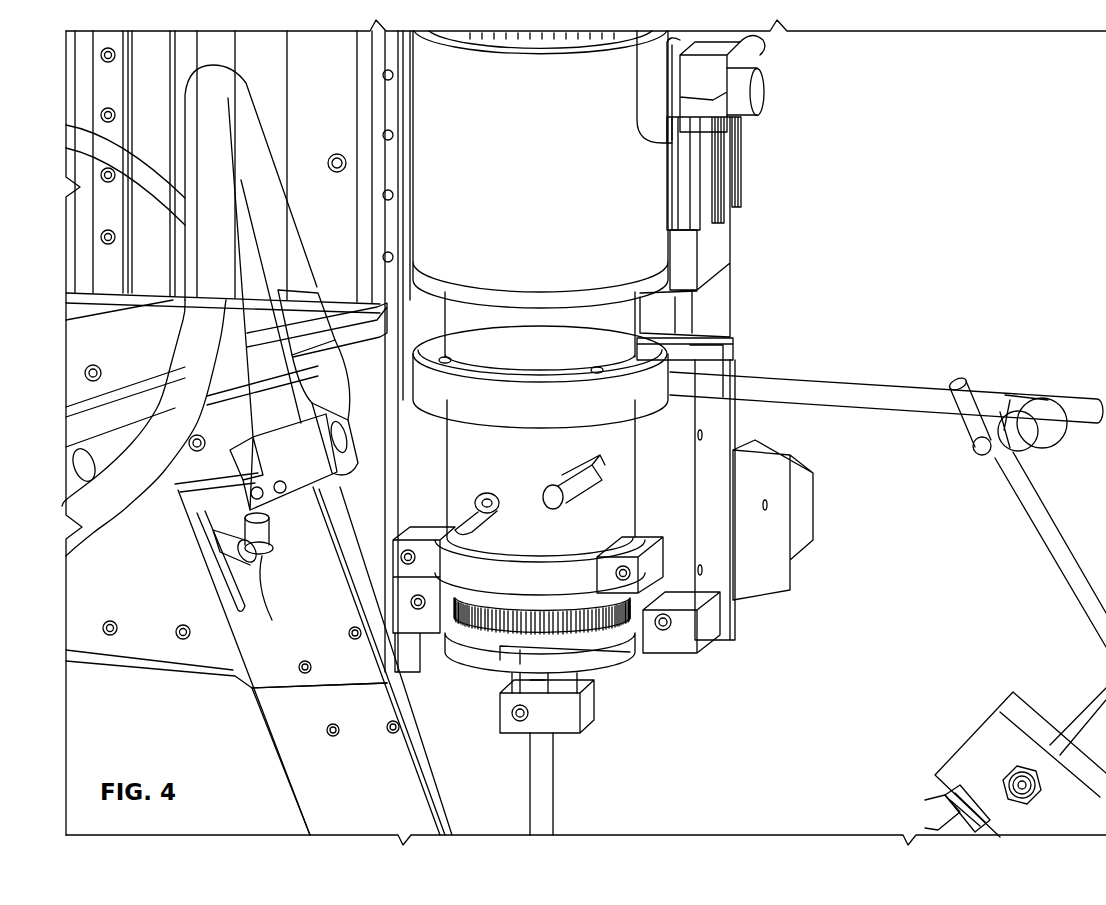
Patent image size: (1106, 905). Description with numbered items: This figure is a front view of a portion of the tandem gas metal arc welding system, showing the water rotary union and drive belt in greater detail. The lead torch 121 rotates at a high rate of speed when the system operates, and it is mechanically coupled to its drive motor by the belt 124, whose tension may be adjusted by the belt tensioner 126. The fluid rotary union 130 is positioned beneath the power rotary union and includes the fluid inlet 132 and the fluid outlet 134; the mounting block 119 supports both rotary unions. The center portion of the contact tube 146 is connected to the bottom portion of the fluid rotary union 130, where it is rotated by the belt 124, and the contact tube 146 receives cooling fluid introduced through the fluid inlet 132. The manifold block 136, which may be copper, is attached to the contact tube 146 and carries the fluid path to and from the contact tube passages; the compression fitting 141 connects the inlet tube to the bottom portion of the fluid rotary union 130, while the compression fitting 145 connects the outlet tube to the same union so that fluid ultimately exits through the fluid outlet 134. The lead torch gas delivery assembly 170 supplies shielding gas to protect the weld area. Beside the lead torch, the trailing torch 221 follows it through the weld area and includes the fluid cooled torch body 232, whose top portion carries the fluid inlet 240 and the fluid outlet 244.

The mounting block 119 is at (715, 500).
The lead torch 121 is at (527, 807).
The belt 124 is at (597, 617).
The belt tensioner 126 is at (773, 520).
The fluid rotary union 130 is at (541, 468).
The fluid inlet 132 is at (470, 516).
The fluid outlet 134 is at (577, 476).
The manifold block 136 is at (566, 707).
The compression fitting 141 is at (555, 678).
The compression fitting 145 is at (606, 677).
The contact tube 146 is at (530, 787).
The lead torch gas delivery assembly 170 is at (1017, 694).
The trailing torch 221 is at (428, 757).
The torch body 232 is at (319, 759).
The fluid inlet 240 is at (257, 560).
The fluid outlet 244 is at (280, 553).